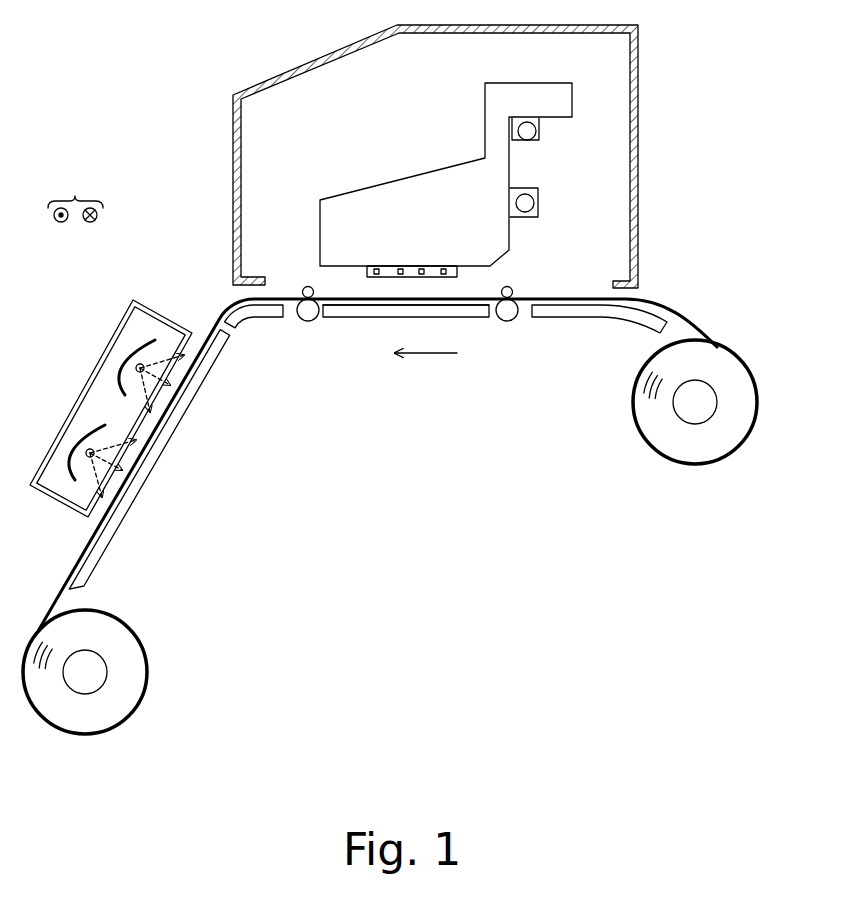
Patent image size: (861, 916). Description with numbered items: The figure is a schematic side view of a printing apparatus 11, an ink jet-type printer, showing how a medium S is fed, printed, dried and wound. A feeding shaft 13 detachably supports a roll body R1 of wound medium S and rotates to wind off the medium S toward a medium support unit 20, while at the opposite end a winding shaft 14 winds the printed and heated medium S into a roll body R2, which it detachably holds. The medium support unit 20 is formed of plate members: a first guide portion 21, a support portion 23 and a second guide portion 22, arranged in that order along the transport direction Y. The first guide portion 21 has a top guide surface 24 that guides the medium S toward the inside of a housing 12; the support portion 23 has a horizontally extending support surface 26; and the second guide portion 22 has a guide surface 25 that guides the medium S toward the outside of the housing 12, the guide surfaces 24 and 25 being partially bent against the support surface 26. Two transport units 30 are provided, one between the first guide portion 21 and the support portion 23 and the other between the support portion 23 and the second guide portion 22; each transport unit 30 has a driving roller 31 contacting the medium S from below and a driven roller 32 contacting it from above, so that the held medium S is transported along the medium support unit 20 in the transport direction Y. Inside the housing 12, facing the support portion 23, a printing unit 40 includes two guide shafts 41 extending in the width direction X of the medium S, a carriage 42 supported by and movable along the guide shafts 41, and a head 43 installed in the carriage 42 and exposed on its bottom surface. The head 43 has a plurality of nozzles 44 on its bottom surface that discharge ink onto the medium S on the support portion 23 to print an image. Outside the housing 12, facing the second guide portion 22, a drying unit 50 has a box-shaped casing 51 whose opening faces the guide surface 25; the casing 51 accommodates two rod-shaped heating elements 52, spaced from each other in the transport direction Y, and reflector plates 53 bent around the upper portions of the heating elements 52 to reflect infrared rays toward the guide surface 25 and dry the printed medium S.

The printing apparatus 11 is at (107, 67).
The housing 12 is at (233, 132).
The feeding shaft 13 is at (696, 424).
The winding shaft 14 is at (85, 694).
The medium support unit 20 is at (365, 374).
The first guide portion 21 is at (585, 317).
The second guide portion 22 is at (203, 372).
The support portion 23 is at (336, 318).
The guide surface 24 is at (574, 299).
The guide surface 25 is at (207, 331).
The support surface 26 is at (350, 296).
The transport unit 30 is at (507, 338).
The driving roller 31 is at (303, 327).
The driven roller 32 is at (304, 288).
The printing unit 40 is at (353, 146).
The guide shaft 41 is at (538, 131).
The carriage 42 is at (414, 173).
The head 43 is at (457, 273).
The nozzles 44 is at (402, 268).
The drying unit 50 is at (62, 368).
The casing 51 is at (149, 300).
The heating element 52 is at (137, 364).
The reflector plate 53 is at (122, 364).
The roll body R1 is at (637, 428).
The roll body R2 is at (148, 667).
The medium S is at (685, 316).
The width direction X is at (75, 194).
The transport direction Y is at (426, 369).